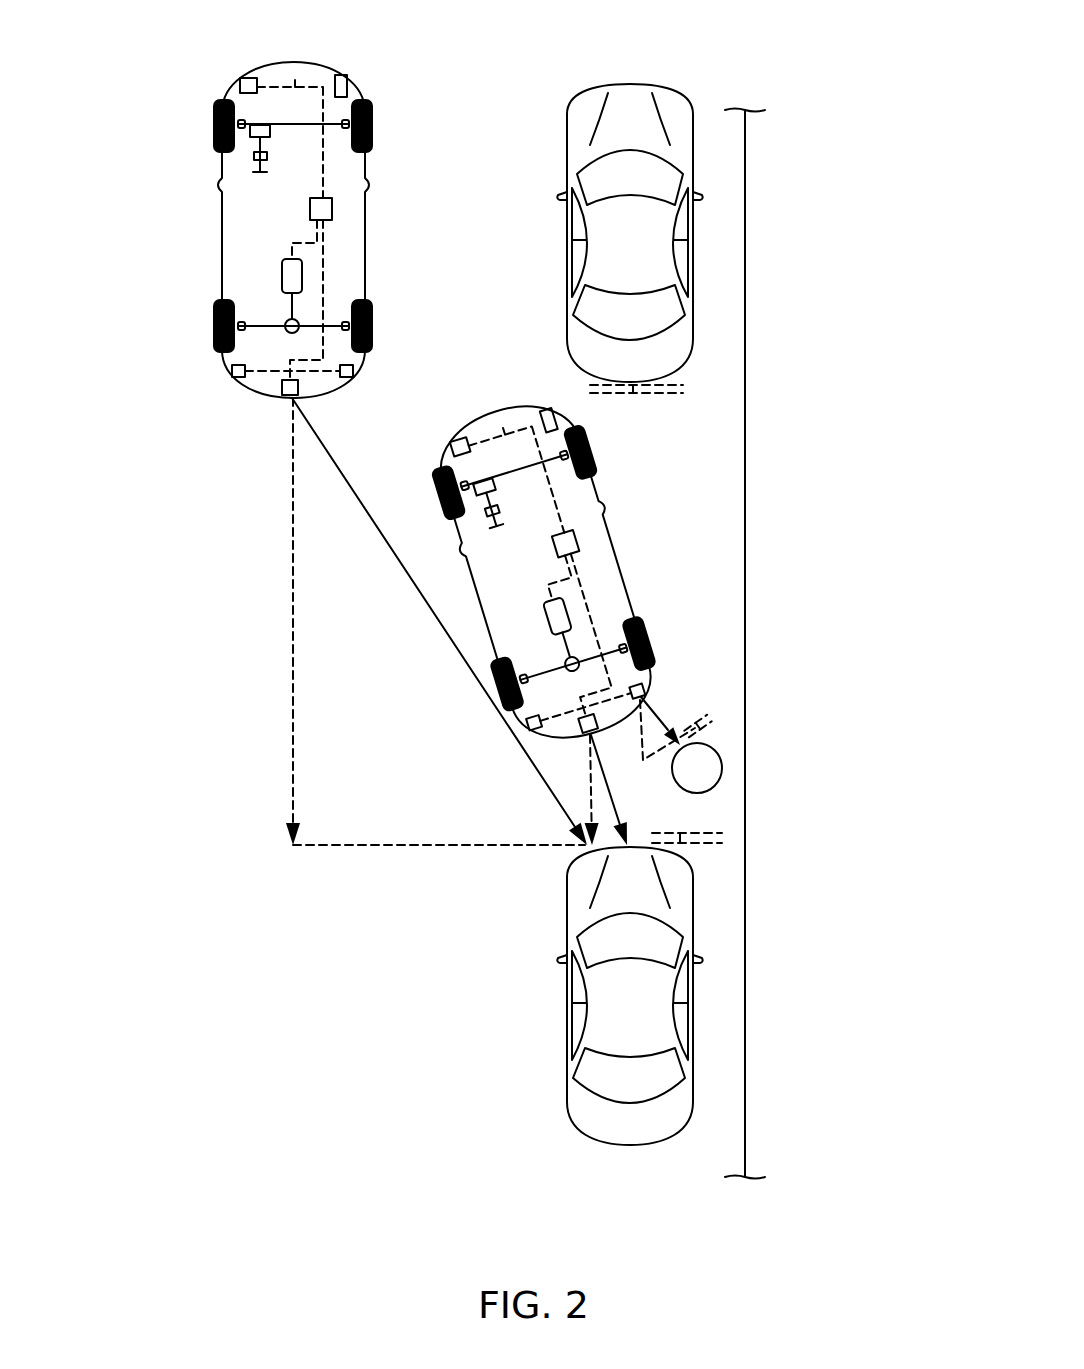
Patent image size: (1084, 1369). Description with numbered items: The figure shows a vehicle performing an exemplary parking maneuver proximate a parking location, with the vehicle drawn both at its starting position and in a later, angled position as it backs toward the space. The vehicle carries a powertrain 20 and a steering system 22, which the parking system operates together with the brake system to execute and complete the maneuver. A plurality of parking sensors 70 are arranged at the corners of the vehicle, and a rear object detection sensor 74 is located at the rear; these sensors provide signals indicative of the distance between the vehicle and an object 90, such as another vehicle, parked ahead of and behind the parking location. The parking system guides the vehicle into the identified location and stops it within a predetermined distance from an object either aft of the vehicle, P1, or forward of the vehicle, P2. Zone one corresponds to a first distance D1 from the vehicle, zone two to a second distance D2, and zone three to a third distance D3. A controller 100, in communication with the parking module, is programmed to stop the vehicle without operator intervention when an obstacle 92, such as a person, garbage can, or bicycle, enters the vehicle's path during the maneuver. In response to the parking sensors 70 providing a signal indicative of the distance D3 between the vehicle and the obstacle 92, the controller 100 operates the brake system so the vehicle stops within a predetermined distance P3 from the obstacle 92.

The steering system 22 is at (282, 238).
The powertrain 20 is at (272, 282).
The parking sensors 70 is at (244, 78).
The rear object detection sensor 74 is at (289, 397).
The controller 100 is at (310, 208).
The object 90 is at (567, 148).
The obstacle 92 is at (722, 775).
The first distance D1 is at (293, 625).
The second distance D2 is at (590, 808).
The third distance D3 is at (688, 693).
The predetermined distance aft of the vehicle P1 is at (680, 843).
The predetermined distance forward of the vehicle P2 is at (633, 393).
The predetermined distance from the obstacle P3 is at (707, 728).